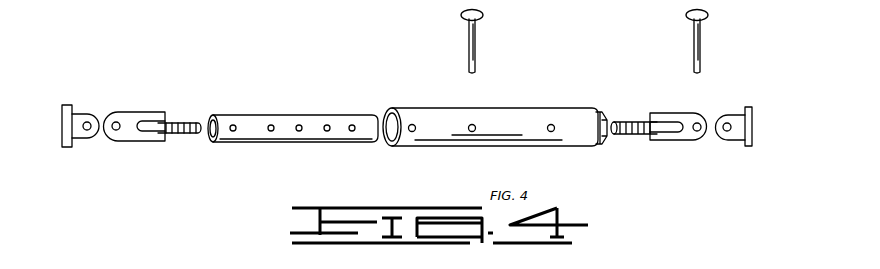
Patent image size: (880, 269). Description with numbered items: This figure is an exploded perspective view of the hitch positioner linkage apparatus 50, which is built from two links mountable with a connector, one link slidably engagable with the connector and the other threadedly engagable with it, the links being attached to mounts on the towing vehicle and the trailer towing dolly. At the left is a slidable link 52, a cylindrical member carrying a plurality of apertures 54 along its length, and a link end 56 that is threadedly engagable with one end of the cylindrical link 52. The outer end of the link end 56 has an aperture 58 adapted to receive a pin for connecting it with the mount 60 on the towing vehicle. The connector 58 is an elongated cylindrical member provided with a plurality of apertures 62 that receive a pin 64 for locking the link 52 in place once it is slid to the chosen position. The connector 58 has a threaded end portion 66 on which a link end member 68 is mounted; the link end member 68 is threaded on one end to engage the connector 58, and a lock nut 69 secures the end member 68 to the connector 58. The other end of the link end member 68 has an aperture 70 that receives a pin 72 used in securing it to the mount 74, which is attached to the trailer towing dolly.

The hitch positioner linkage apparatus 50 is at (535, 57).
The slidable link 52 is at (240, 118).
The apertures 54 is at (299, 132).
The link end 56 is at (128, 117).
The connector 58 is at (116, 121).
The mount 60 is at (62, 121).
The apertures 62 is at (474, 124).
The pin 64 is at (470, 40).
The threaded end portion 66 is at (573, 139).
The link end member 68 is at (688, 113).
The lock nut 69 is at (604, 112).
The aperture 70 is at (697, 132).
The pin 72 is at (704, 24).
The mount 74 is at (753, 124).